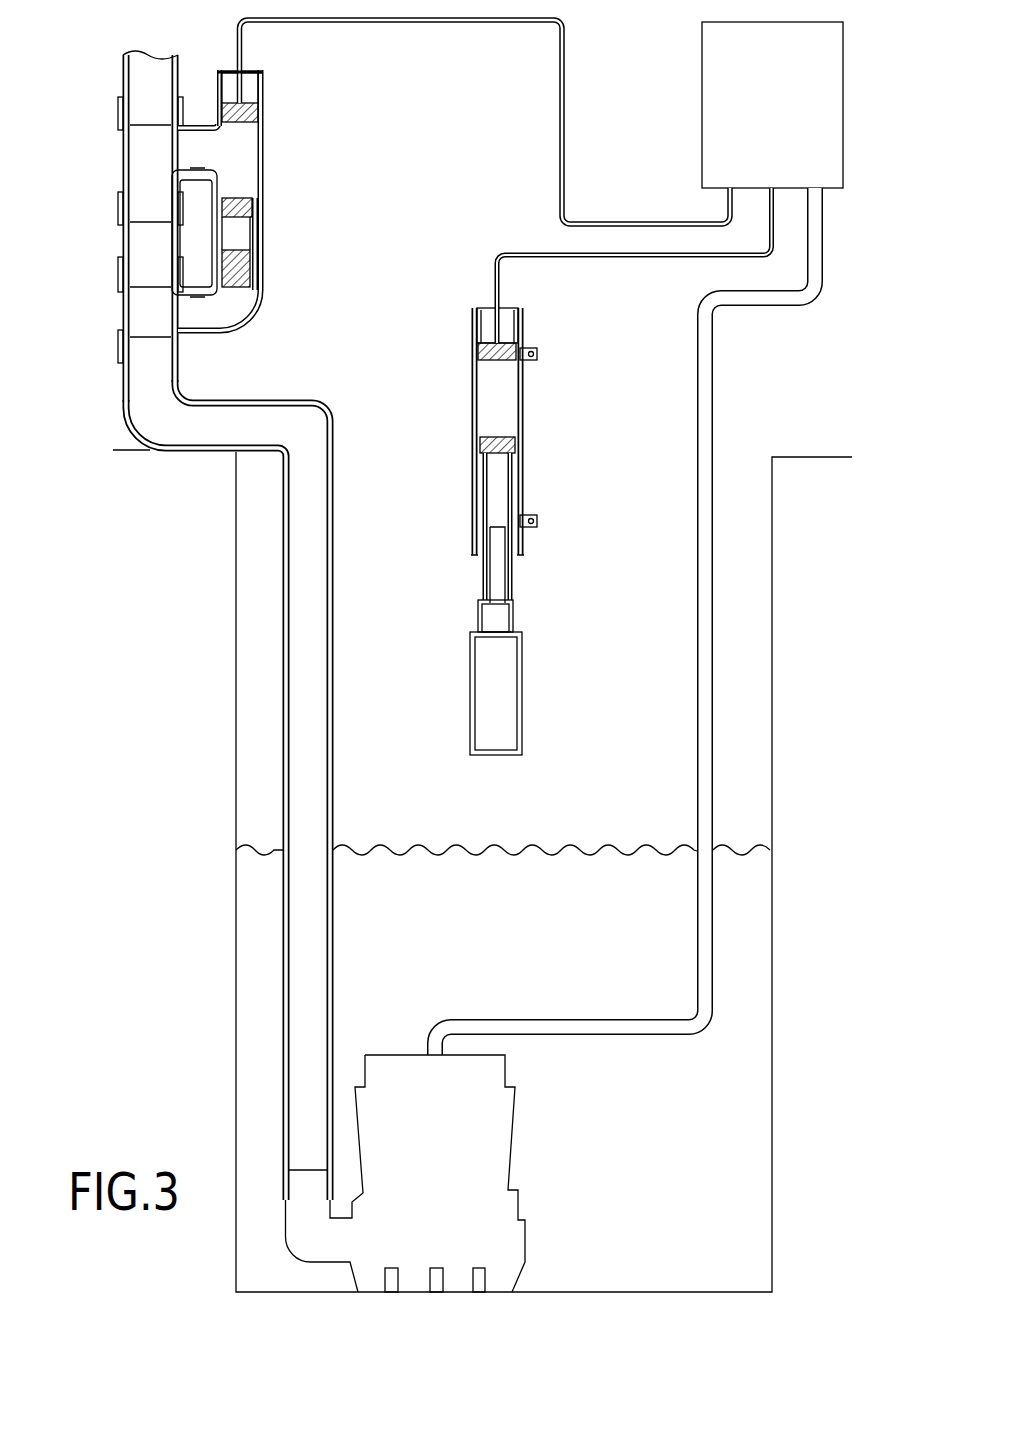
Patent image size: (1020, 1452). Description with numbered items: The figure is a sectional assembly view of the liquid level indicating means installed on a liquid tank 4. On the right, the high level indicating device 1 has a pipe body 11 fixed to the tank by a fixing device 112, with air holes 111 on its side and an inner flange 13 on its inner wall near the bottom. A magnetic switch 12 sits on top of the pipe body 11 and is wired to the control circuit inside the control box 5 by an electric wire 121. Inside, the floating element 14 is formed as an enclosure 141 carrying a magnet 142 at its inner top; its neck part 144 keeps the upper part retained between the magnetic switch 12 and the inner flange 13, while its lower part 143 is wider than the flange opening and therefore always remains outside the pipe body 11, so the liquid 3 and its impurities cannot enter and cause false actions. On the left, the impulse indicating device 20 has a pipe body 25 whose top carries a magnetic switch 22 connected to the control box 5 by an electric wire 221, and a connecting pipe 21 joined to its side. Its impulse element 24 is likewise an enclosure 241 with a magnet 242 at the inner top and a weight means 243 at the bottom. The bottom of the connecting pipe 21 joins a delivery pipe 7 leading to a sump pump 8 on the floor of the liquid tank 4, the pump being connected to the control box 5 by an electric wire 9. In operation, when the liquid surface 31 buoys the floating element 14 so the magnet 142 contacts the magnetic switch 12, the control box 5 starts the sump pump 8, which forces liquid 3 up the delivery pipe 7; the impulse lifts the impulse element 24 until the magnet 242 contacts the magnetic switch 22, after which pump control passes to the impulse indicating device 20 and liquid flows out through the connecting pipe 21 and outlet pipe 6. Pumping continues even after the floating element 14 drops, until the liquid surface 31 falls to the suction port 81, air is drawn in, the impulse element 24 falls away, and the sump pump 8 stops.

The high level indicating device 1 is at (568, 477).
The pipe body 11 is at (507, 443).
The air holes 111 is at (524, 393).
The fixing device 112 is at (537, 355).
The magnetic switch 12 is at (583, 265).
The electric wire 121 is at (494, 296).
The inner flange 13 is at (507, 565).
The floating element 14 is at (484, 683).
The enclosure 141 is at (478, 488).
The magnet 142 is at (522, 440).
The lower part 143 is at (512, 722).
The neck part 144 is at (477, 612).
The impulse indicating device 20 is at (378, 601).
The connecting pipe 21 is at (122, 246).
The magnetic switch 22 is at (450, 113).
The electric wire 221 is at (236, 46).
The impulse element 24 is at (292, 232).
The enclosure 241 is at (258, 235).
The magnet 242 is at (255, 205).
The weight means 243 is at (255, 270).
The pipe body 25 is at (264, 182).
The liquid 3 is at (482, 831).
The liquid surface 31 is at (411, 848).
The liquid tank 4 is at (795, 452).
The control box 5 is at (700, 105).
The outlet pipe 6 is at (124, 70).
The delivery pipe 7 is at (335, 940).
The sump pump 8 is at (442, 1173).
The suction port 81 is at (481, 1280).
The electric wire 9 is at (636, 1035).